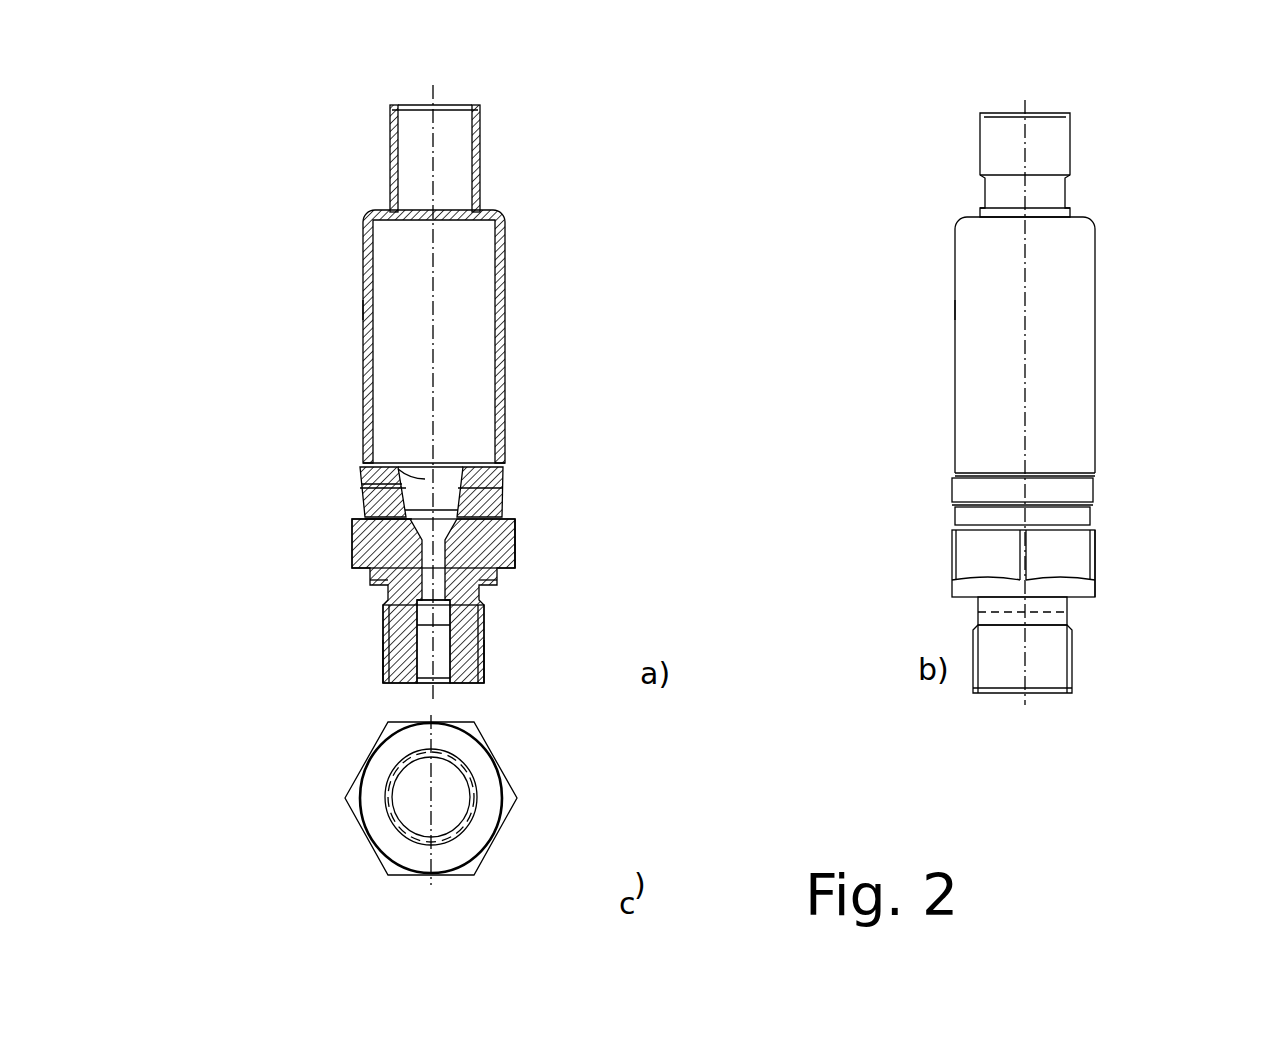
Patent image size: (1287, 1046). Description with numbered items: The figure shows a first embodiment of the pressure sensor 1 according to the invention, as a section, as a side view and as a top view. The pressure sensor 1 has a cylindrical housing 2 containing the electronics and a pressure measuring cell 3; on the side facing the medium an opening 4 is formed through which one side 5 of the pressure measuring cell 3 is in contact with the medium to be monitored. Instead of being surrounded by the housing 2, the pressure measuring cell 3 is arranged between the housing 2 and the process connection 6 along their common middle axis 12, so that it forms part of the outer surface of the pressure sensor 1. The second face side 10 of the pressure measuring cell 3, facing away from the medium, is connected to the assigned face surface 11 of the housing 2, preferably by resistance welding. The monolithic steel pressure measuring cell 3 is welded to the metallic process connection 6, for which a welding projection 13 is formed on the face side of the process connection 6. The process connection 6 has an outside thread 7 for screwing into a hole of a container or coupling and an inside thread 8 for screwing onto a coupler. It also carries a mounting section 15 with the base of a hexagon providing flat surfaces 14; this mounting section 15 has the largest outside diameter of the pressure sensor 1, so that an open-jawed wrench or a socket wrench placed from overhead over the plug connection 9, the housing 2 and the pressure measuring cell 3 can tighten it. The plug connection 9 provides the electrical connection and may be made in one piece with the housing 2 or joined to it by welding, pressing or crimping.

The pressure sensor 1 is at (322, 290).
The housing 2 is at (505, 375).
The pressure measuring cell 3 is at (504, 478).
The opening 4 is at (383, 645).
The side of the pressure measuring cell 5 is at (363, 487).
The process connection 6 is at (512, 600).
The outside thread 7 is at (483, 632).
The inside thread 8 is at (480, 648).
The plug connection 9 is at (482, 142).
The second face side 10 is at (504, 466).
The face surface of the housing 11 is at (362, 455).
The common middle axis 12 is at (433, 100).
The welding projection 13 is at (353, 516).
The flat surfaces 14 is at (348, 553).
The mounting section 15 is at (522, 528).